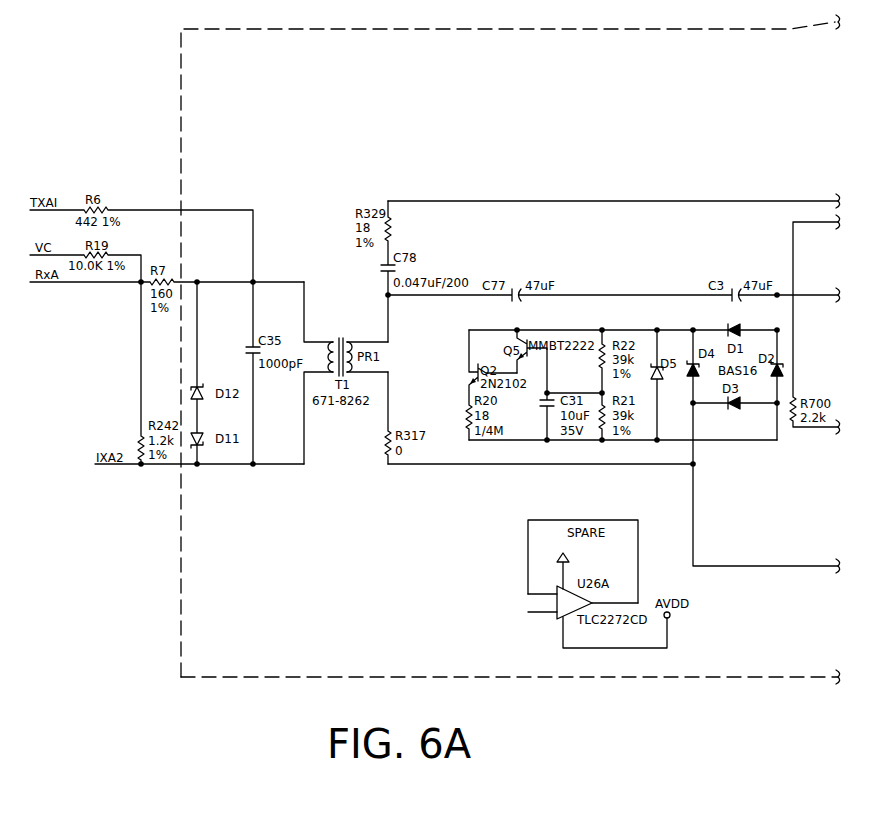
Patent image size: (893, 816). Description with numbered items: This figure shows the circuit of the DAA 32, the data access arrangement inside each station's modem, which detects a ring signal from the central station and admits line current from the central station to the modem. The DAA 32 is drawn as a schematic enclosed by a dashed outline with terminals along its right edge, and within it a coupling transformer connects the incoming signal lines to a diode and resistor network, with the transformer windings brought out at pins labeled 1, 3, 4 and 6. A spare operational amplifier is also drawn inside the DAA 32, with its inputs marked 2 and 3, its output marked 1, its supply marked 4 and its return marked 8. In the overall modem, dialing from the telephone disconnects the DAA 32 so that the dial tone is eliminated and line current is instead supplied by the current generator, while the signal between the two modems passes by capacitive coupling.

The DAA 32 is at (534, 171).
The transformer pin 1 / op-amp output pin 1 is at (492, 466).
The op-amp inverting input pin 2 is at (542, 587).
The transformer pin 3 / op-amp non-inverting input pin 3 is at (452, 487).
The transformer pin 4 / op-amp supply pin 4 is at (440, 475).
The transformer pin 6 is at (318, 312).
The op-amp ground pin 8 is at (616, 630).